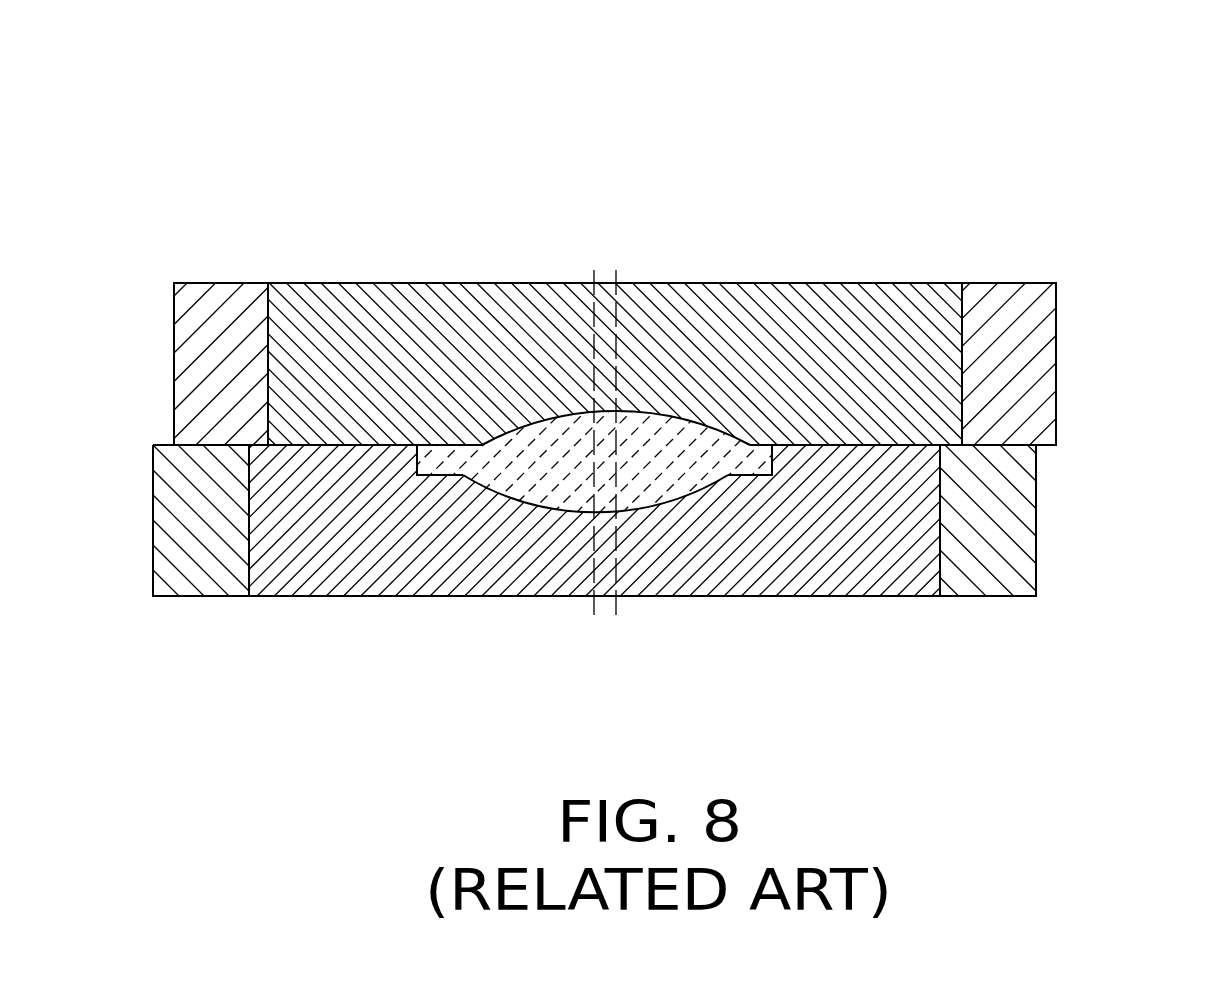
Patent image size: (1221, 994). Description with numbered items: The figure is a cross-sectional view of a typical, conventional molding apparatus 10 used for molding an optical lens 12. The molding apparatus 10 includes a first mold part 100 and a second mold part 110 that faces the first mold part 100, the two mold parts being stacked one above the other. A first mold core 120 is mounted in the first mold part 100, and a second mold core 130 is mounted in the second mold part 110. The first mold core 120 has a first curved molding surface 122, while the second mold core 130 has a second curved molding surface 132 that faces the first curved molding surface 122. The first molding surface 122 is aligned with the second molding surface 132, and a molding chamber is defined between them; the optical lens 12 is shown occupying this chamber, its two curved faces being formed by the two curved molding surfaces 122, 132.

The molding apparatus 10 is at (651, 61).
The optical lens 12 is at (498, 490).
The first mold part 100 is at (591, 558).
The second mold part 110 is at (608, 326).
The first mold core 120 is at (865, 565).
The first curved molding surface 122 is at (542, 494).
The second mold core 130 is at (847, 323).
The second curved molding surface 132 is at (672, 429).